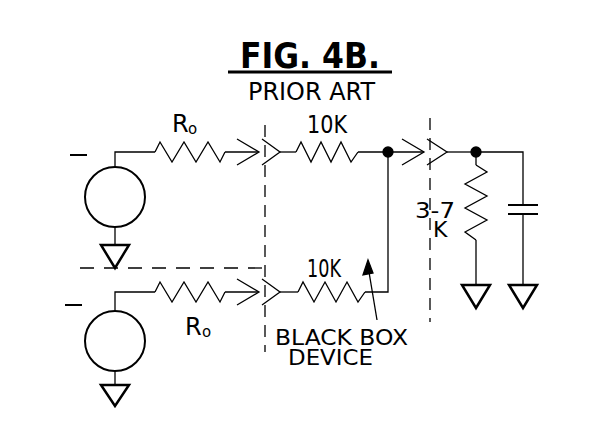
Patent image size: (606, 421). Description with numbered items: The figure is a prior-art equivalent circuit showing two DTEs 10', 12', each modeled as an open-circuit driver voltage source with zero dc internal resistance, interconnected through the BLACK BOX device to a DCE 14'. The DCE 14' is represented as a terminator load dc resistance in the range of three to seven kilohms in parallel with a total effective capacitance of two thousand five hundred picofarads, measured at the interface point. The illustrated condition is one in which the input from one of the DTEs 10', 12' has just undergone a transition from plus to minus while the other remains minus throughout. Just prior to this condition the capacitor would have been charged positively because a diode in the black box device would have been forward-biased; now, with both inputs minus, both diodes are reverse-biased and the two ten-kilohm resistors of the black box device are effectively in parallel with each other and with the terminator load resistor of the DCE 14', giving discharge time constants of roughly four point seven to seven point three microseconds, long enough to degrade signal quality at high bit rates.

The DTE 10' is at (103, 210).
The DTE 12' is at (103, 349).
The DCE 14' is at (524, 242).